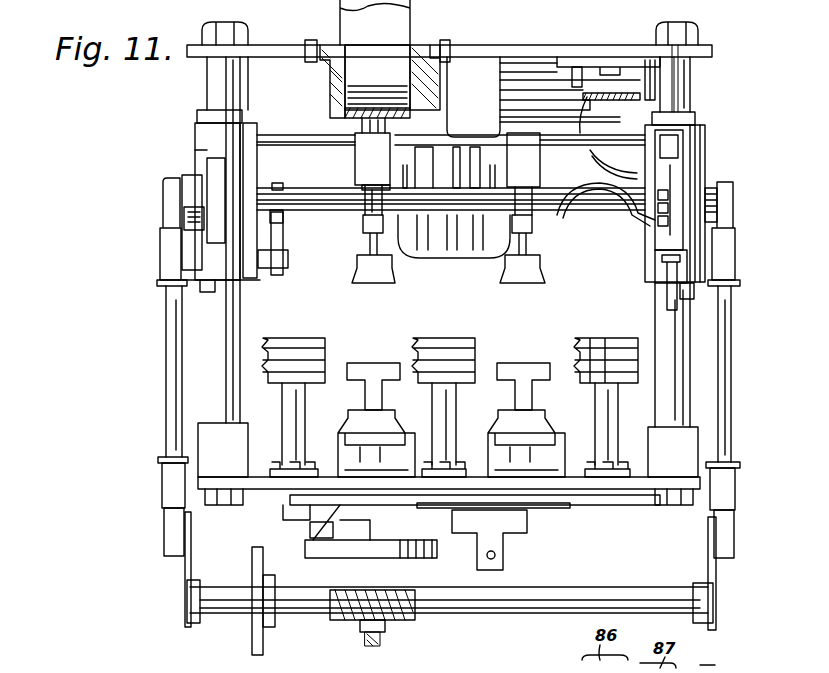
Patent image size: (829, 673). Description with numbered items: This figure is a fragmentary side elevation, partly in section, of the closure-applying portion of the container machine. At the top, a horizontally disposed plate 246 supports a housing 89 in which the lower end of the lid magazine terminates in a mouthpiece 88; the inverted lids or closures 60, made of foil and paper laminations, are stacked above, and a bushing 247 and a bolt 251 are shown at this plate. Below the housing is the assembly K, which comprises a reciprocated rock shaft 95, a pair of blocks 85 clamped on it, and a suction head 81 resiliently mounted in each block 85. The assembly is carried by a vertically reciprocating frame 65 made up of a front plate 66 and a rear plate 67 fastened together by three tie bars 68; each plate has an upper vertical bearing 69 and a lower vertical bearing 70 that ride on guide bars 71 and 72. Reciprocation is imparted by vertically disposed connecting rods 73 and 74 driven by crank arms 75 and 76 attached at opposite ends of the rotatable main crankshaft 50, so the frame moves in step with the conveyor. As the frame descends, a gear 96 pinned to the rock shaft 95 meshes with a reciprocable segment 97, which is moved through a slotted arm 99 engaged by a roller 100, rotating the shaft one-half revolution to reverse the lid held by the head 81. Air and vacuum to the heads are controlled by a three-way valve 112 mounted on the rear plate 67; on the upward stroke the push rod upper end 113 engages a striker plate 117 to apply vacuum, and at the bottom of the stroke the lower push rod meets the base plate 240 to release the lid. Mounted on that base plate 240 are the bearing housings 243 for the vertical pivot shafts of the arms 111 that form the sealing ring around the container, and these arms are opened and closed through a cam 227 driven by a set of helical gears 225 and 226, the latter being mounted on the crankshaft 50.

The horizontally disposed plate 246 is at (268, 47).
The bolt 251 is at (682, 47).
The striker plate 117 is at (594, 62).
The push rod upper end 113 is at (678, 73).
The guide bar 72 is at (241, 312).
The upper vertical bearing 69 is at (197, 114).
The reciprocating frame 65 is at (195, 148).
The front plate 66 is at (256, 177).
The roller 100 is at (186, 214).
The slotted arm 99 is at (190, 240).
The connecting rod 74 is at (166, 372).
The lower vertical bearing 70 is at (201, 294).
The reciprocable segment 97 is at (284, 250).
The rock shaft 95 is at (313, 188).
The gear 96 is at (291, 176).
The block 85 is at (362, 189).
The lid or closure 60 is at (358, 92).
The bushing 247 is at (320, 82).
The mouthpiece 88 is at (340, 110).
The assembly K is at (358, 170).
The housing 89 is at (438, 100).
The tie bar 68 is at (560, 152).
The three-way valve 112 is at (672, 168).
The rear plate 67 is at (652, 278).
The guide bar 71 is at (655, 316).
The connecting rod 73 is at (720, 366).
The suction head 81 is at (380, 280).
The arm 111 is at (322, 342).
The bearing housing 243 is at (320, 424).
The base plate 240 is at (266, 490).
The cam 227 is at (330, 558).
The rotatable shaft 50 is at (518, 613).
The crank arm 76 is at (185, 576).
The crank arm 75 is at (708, 572).
The helical gear 225 is at (336, 620).
The helical gear 226 is at (378, 644).